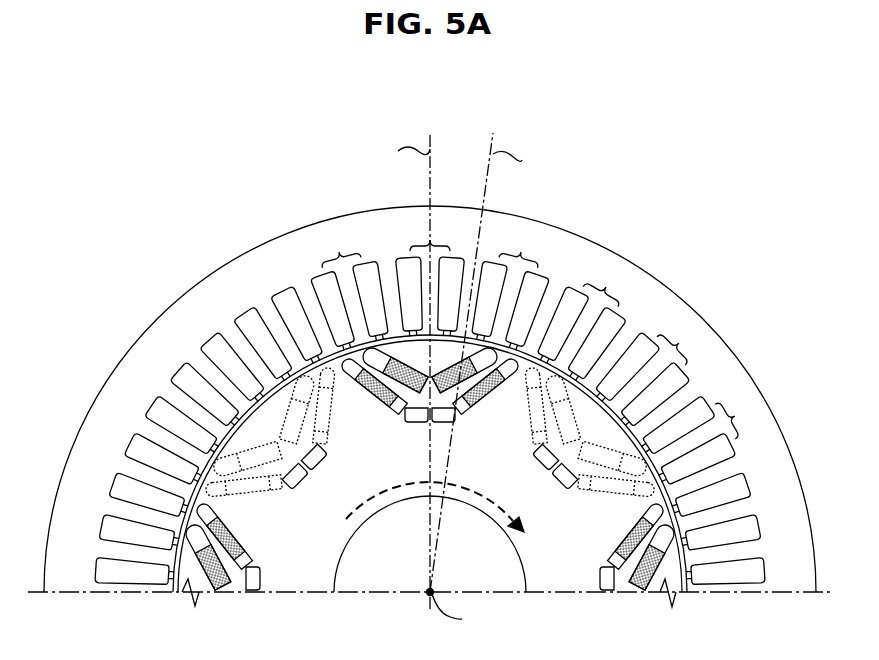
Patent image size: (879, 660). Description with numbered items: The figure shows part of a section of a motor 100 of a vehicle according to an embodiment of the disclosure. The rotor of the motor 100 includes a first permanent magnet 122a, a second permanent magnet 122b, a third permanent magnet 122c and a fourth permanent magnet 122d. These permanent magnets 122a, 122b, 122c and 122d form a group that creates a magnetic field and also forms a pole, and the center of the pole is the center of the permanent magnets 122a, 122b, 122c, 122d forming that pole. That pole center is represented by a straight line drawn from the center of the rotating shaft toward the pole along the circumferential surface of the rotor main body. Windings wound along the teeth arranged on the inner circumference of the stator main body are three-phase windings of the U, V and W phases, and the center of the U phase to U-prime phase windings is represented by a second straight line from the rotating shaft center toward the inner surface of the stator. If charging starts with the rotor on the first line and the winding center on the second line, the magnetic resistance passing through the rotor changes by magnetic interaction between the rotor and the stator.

The motor 100 is at (129, 160).
The first permanent magnet 122a is at (405, 408).
The second permanent magnet 122b is at (455, 408).
The third permanent magnet 122c is at (373, 391).
The fourth permanent magnet 122d is at (487, 391).